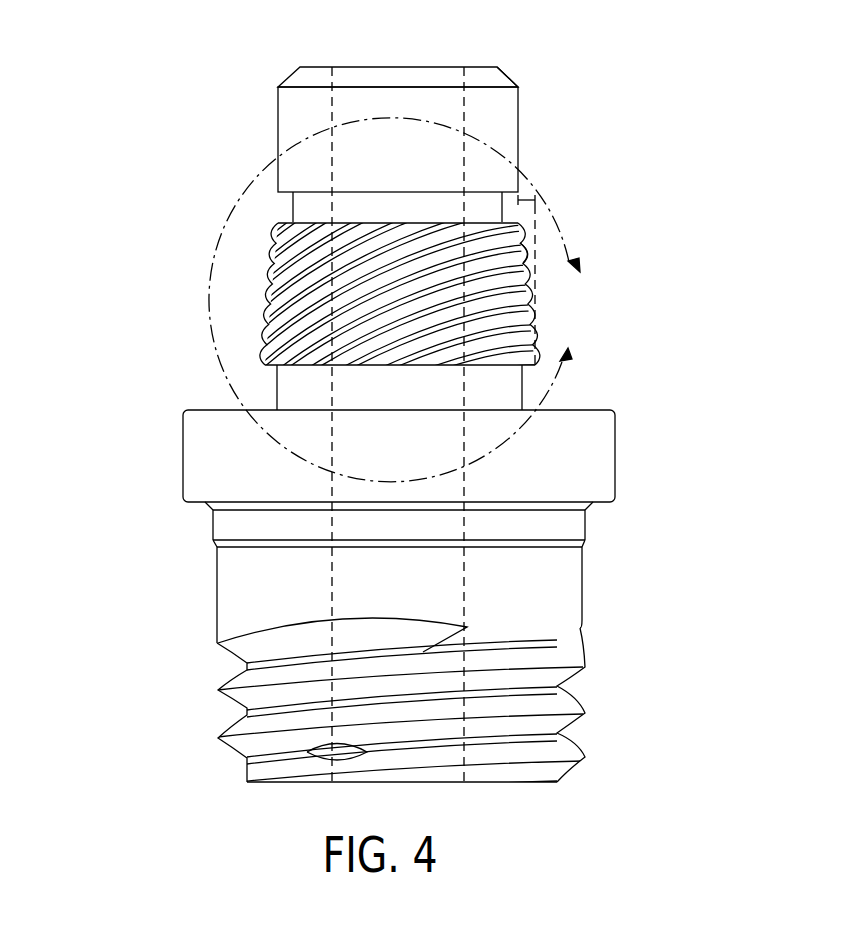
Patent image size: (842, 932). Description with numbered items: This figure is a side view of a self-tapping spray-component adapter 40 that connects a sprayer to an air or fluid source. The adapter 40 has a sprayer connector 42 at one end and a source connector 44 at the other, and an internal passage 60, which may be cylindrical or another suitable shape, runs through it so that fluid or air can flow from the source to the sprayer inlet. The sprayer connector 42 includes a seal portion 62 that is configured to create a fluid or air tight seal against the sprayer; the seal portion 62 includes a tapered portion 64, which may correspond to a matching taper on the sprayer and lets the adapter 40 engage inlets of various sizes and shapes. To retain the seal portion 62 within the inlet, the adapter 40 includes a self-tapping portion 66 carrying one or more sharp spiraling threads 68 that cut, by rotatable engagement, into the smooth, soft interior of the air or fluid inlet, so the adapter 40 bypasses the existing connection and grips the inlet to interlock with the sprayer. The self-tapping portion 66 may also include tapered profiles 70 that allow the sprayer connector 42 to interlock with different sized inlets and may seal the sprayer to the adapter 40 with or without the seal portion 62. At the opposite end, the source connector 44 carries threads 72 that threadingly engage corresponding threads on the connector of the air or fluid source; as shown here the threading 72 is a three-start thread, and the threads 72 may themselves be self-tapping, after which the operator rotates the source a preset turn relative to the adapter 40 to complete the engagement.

The spray-component adapter 40 is at (664, 202).
The sprayer connector 42 is at (195, 154).
The source connector 44 is at (184, 703).
The internal passage 60 is at (464, 582).
The seal portion 62 is at (518, 125).
The tapered portion 64 is at (502, 85).
The self-tapping portion 66 is at (250, 290).
The sharp spiraling threads 68 is at (522, 262).
The tapered profile 70 is at (527, 206).
The threads 72 is at (578, 733).